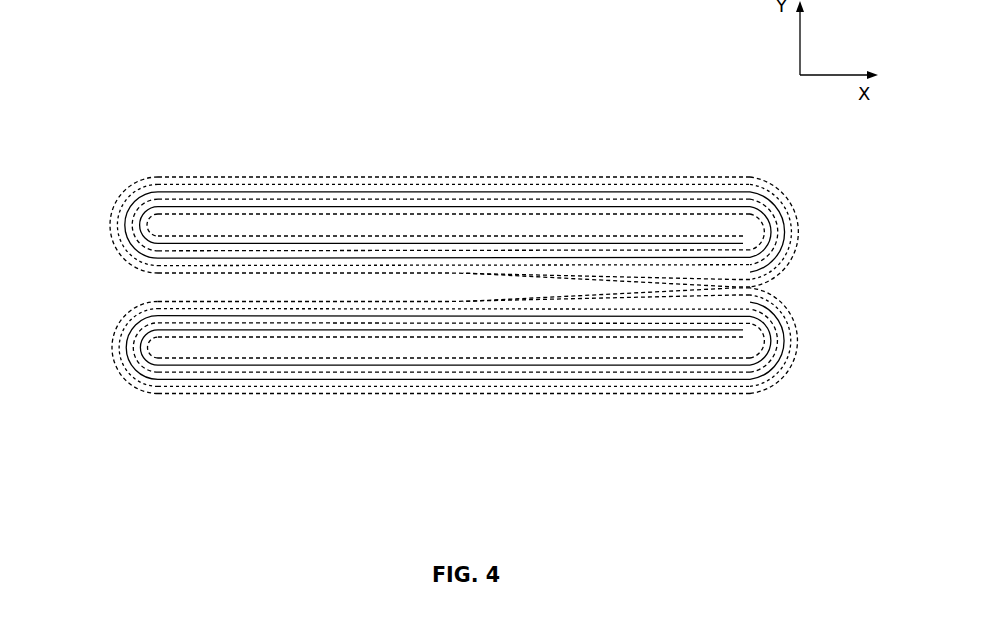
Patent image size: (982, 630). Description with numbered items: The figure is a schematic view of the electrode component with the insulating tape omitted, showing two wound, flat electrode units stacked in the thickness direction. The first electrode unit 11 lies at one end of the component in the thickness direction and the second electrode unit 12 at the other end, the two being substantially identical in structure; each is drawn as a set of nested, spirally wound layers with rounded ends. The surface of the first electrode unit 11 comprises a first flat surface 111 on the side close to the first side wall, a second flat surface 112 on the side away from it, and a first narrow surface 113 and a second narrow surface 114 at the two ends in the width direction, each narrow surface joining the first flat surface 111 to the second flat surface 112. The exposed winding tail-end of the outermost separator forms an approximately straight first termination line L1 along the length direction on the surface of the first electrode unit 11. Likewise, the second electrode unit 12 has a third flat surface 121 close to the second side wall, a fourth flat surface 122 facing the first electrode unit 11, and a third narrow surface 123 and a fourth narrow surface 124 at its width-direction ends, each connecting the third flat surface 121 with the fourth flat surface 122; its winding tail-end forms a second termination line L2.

The first electrode unit 11 is at (456, 188).
The first flat surface 111 is at (452, 177).
The second flat surface 112 is at (237, 273).
The first narrow surface 113 is at (107, 225).
The second narrow surface 114 is at (804, 233).
The second electrode unit 12 is at (456, 377).
The third flat surface 121 is at (423, 395).
The fourth flat surface 122 is at (215, 300).
The third narrow surface 123 is at (107, 347).
The fourth narrow surface 124 is at (804, 345).
The first termination line L1 is at (453, 273).
The second termination line L2 is at (453, 299).